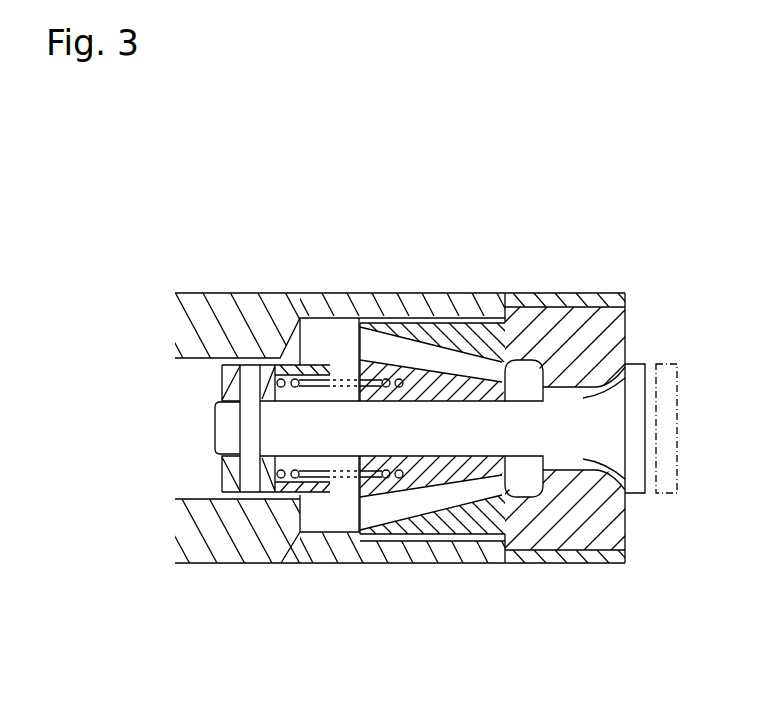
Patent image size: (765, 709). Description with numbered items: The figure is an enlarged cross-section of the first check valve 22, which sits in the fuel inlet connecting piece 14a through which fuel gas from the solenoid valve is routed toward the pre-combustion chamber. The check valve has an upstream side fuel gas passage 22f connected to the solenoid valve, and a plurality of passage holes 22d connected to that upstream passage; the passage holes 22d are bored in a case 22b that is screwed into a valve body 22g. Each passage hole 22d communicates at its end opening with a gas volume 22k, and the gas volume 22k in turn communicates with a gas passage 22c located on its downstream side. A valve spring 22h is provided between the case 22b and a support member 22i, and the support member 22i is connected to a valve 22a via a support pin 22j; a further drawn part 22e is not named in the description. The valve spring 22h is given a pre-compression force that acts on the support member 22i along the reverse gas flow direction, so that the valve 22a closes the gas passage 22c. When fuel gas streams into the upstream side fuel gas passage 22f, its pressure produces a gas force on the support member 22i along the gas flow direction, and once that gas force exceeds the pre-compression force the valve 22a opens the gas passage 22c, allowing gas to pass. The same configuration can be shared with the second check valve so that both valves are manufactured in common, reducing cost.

The first check valve 22 is at (606, 279).
The valve 22a is at (632, 369).
The case 22b is at (531, 305).
The gas passage 22c is at (565, 465).
The passage holes 22d is at (452, 358).
The block 22e is at (326, 518).
The upstream side fuel gas passage 22f is at (201, 366).
The valve body 22g is at (340, 305).
The valve spring 22h is at (282, 495).
The support member 22i is at (222, 381).
The support pin 22j is at (222, 467).
The gas volume 22k is at (527, 492).
The fuel inlet connecting piece 14a is at (212, 581).